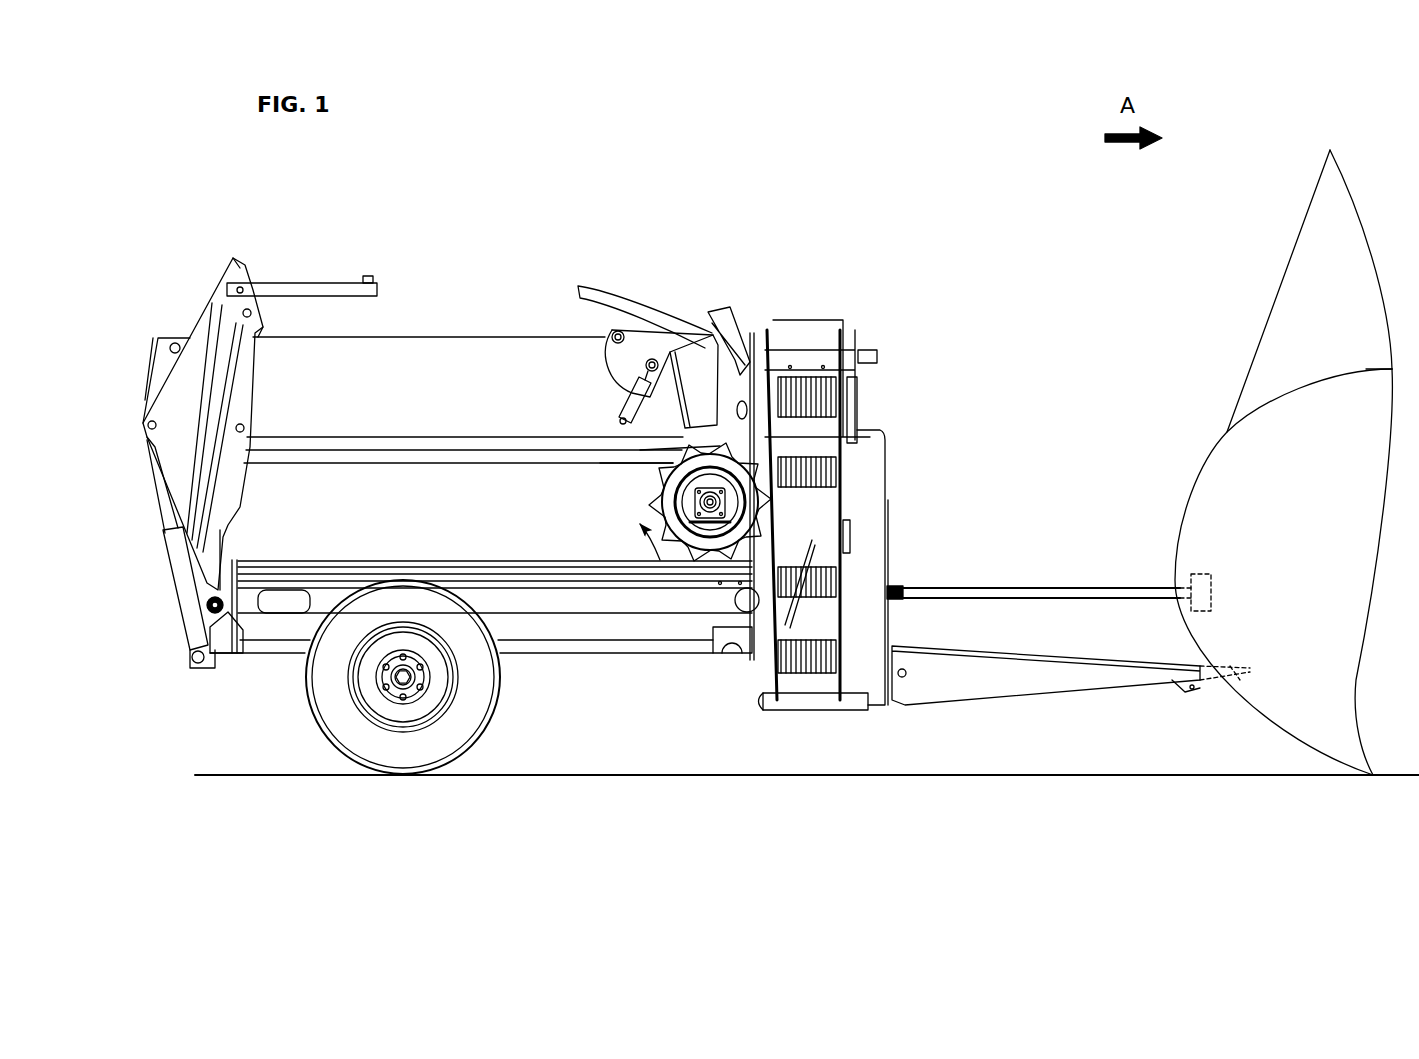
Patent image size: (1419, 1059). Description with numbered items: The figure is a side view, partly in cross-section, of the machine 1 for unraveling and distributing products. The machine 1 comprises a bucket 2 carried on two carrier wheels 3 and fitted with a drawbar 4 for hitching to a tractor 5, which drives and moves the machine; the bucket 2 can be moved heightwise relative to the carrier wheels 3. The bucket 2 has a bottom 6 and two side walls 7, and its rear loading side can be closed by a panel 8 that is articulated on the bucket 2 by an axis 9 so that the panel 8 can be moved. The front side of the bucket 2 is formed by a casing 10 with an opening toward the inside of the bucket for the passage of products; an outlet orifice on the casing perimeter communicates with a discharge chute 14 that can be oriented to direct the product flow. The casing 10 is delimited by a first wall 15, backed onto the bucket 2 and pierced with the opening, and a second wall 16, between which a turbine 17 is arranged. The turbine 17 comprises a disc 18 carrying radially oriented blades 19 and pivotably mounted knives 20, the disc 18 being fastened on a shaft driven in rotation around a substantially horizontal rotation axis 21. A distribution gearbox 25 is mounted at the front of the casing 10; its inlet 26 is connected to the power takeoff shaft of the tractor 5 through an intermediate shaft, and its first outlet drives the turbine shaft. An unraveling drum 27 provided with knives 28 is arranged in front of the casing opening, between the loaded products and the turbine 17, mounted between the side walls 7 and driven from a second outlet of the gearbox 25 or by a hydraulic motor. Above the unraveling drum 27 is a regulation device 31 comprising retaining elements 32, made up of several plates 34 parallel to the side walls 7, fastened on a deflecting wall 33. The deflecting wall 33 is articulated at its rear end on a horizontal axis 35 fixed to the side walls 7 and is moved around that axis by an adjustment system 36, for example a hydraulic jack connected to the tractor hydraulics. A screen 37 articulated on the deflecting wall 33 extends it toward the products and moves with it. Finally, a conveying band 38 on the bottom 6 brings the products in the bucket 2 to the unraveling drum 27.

The machine 1 is at (183, 205).
The bucket 2 is at (491, 333).
The carrier wheels 3 is at (330, 722).
The drawbar 4 is at (1042, 690).
The tractor 5 is at (1288, 286).
The bottom 6 is at (657, 612).
The side walls 7 is at (448, 345).
The panel 8 is at (207, 332).
The axis 9 is at (210, 613).
The casing 10 is at (848, 582).
The discharge chute 14 is at (827, 335).
The first wall 15 is at (780, 685).
The second wall 16 is at (843, 682).
The turbine 17 is at (845, 562).
The disc 18 is at (808, 622).
The blades 19 is at (805, 625).
The knives 20 is at (813, 700).
The rotation axis 21 is at (852, 528).
The distribution gearbox 25 is at (890, 580).
The inlet 26 is at (892, 602).
The unraveling drum 27 is at (650, 504).
The knives 28 is at (650, 486).
The regulation device 31 is at (527, 396).
The retaining elements 32 is at (680, 424).
The deflecting wall 33 is at (603, 345).
The plates 34 is at (690, 444).
The axis 35 is at (607, 333).
The adjustment system 36 is at (616, 386).
The screen 37 is at (675, 322).
The conveying band 38 is at (575, 600).